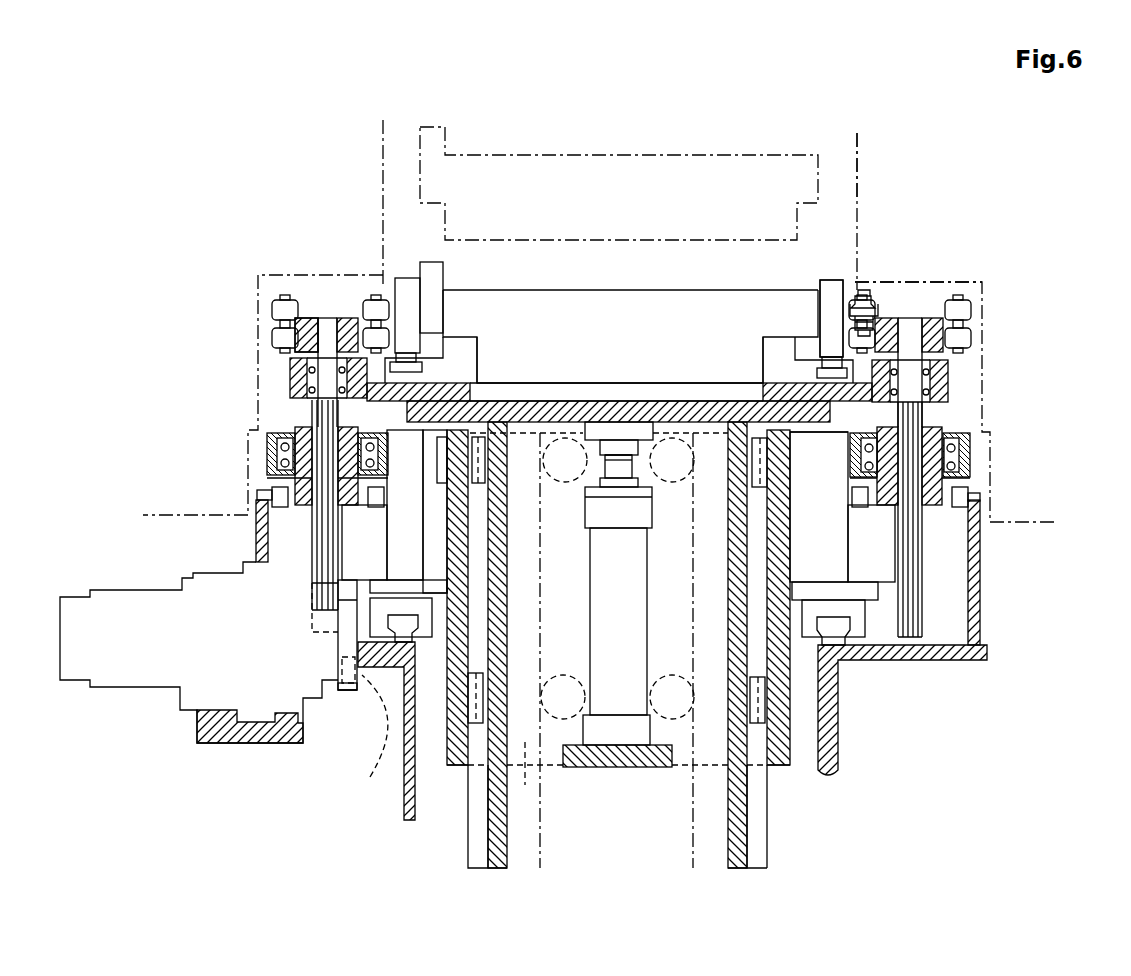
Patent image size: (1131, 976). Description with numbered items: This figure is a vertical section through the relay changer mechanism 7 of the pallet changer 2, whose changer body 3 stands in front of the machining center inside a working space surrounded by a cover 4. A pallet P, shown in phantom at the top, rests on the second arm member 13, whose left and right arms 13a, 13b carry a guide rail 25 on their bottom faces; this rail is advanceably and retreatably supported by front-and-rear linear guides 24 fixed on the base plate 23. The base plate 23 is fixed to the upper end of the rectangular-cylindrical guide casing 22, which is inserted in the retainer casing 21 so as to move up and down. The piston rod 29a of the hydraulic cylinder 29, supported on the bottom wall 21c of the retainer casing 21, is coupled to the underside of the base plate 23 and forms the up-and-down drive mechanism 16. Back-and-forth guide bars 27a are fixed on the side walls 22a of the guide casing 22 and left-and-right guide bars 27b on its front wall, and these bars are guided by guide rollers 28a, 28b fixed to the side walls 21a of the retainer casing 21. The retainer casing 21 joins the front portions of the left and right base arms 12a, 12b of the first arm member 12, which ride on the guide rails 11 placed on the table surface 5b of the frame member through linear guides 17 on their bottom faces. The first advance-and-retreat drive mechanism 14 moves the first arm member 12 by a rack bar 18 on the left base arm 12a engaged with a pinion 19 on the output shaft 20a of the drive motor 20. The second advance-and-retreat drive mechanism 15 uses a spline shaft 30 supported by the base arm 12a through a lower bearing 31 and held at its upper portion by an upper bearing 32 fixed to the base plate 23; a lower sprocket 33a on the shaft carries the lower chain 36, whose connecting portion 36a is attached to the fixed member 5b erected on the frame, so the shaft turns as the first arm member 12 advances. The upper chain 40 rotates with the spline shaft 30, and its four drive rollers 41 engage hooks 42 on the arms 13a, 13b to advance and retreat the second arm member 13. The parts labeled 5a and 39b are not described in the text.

The pallet changer 2 is at (997, 248).
The changer body 3 is at (865, 186).
The cover 4 is at (942, 282).
The base frame 5a is at (878, 645).
The table surface / fixed member 5b is at (256, 550).
The relay changer mechanism 7 is at (809, 281).
The guide rails 11 is at (402, 642).
The first arm member 12 is at (862, 568).
The left-side base arm 12a is at (394, 511).
The right base arm 12b is at (844, 507).
The second arm member 13 is at (868, 280).
The left arm 13a is at (421, 264).
The right arm 13b is at (832, 282).
The first advance-and-retreat drive mechanism 14 is at (343, 707).
The second advance-and-retreat drive mechanism 15 is at (280, 418).
The up-and-down drive mechanism 16 is at (580, 780).
The linear guides 17 is at (795, 600).
The rack bar 18 is at (343, 588).
The pinion 19 is at (353, 685).
The advance-and-retreat drive motor 20 is at (153, 590).
The output shaft 20a is at (367, 739).
The retainer casing 21 is at (795, 738).
The side walls 21a is at (452, 758).
The bottom wall 21c is at (652, 767).
The guide casing 22 is at (762, 858).
The left side wall 22a is at (488, 793).
The base plate 23 is at (630, 401).
The linear guides 24 is at (425, 374).
The guide rail 25 is at (413, 363).
The back-and-forth guide bars 27a is at (478, 832).
The left-and-right guide bars 27b is at (542, 850).
The guide rollers 28a is at (480, 470).
The guide rollers 28b is at (680, 482).
The hydraulic cylinder 29 is at (647, 600).
The piston rod 29a is at (625, 470).
The spline shaft 30 is at (313, 540).
The lower bearing 31 is at (267, 448).
The upper bearing 32 is at (290, 375).
The lower sprocket 33a is at (267, 482).
The lower chain 36 is at (256, 527).
The connecting portion 36a is at (270, 490).
The nut plate 39b is at (304, 318).
The upper chain 40 is at (272, 323).
The drive rollers 41 is at (270, 302).
The hooks 42 is at (400, 278).
The pallet P is at (738, 156).